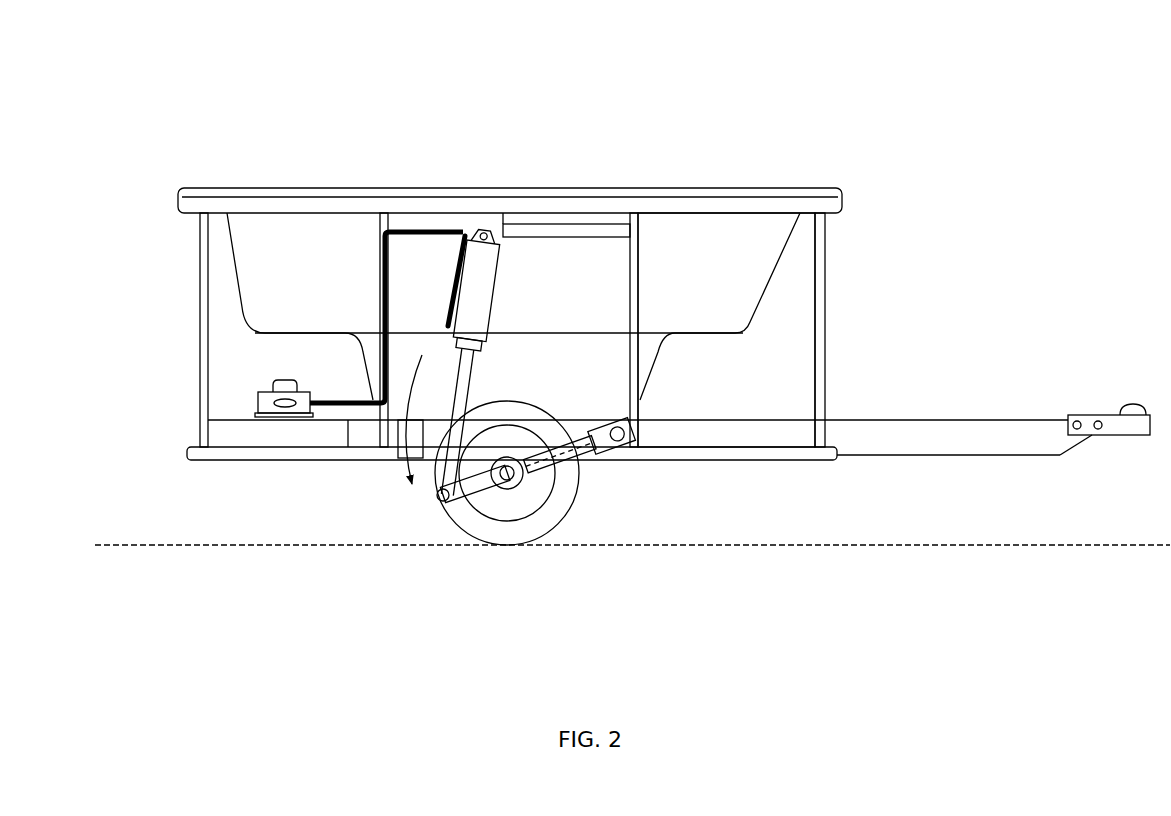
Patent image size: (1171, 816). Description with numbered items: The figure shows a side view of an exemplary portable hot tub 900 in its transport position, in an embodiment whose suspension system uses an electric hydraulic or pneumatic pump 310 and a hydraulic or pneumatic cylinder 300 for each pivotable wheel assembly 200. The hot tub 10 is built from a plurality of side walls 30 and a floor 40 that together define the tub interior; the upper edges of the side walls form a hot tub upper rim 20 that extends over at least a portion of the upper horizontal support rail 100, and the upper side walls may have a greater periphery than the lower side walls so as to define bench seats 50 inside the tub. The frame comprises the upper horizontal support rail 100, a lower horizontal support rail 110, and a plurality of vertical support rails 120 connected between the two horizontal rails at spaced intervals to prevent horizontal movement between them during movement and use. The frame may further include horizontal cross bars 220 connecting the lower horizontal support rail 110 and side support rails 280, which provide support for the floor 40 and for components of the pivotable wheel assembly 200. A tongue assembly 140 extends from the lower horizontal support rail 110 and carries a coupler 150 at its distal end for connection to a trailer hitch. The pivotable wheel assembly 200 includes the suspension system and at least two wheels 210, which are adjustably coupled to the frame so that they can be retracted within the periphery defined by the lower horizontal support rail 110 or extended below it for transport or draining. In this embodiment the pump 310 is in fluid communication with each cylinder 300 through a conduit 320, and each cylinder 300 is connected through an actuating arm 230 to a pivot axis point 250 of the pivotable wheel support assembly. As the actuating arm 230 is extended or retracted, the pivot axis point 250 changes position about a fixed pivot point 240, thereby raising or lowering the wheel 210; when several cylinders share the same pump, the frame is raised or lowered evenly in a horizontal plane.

The portable hot tub 900 is at (933, 106).
The upper horizontal support rail 100 is at (179, 203).
The hot tub upper rim 20 is at (221, 190).
The hot tub 10 is at (670, 240).
The vertical support rails 120 is at (637, 379).
The lower horizontal support rail 110 is at (186, 454).
The side walls 30 is at (357, 353).
The bench seats 50 is at (714, 329).
The side support rails 280 is at (515, 225).
The electric hydraulic or pneumatic pump 310 is at (254, 403).
The cable 320 is at (389, 230).
The hydraulic or pneumatic cylinder 300 is at (466, 238).
The actuating arm 230 is at (466, 386).
The floor 40 is at (396, 419).
The horizontal cross bars 220 is at (396, 439).
The pivot axis point 250 is at (440, 498).
The fixed pivot point 240 is at (623, 437).
The wheel 210 is at (541, 528).
The pivotable wheel assembly 200 is at (507, 569).
The tongue assembly 140 is at (955, 436).
The coupler 150 is at (1122, 427).